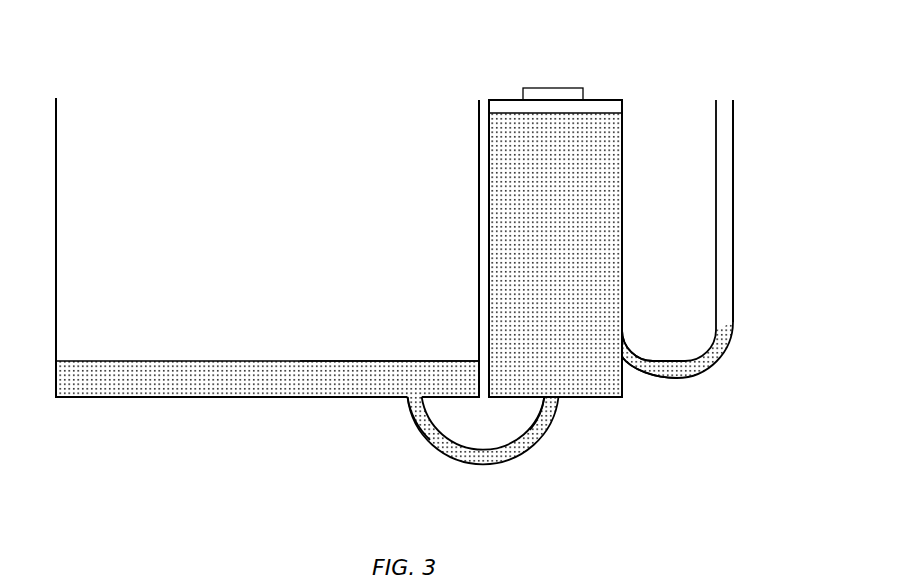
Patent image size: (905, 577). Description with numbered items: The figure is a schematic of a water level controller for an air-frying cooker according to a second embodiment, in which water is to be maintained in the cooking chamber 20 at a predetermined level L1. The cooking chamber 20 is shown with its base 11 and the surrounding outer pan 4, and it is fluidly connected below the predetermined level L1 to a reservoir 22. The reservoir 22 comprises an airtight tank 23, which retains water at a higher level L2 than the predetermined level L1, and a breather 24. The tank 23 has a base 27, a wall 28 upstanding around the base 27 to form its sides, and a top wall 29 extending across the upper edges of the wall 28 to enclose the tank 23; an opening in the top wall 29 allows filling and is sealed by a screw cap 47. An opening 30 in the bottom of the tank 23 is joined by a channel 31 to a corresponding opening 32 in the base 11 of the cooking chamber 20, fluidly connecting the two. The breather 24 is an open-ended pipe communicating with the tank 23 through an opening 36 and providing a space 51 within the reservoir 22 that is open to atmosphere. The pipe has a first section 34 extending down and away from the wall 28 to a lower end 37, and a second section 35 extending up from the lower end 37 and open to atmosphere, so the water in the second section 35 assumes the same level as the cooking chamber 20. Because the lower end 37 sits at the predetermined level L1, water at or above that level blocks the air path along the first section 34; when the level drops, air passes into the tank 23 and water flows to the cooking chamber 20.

The outer pan 4 is at (93, 398).
The base of the cooking chamber 11 is at (233, 398).
The predetermined level L1 is at (149, 360).
The cooking chamber 20 is at (280, 193).
The reservoir 22 is at (584, 53).
The tank 23 is at (624, 172).
The higher level L2 is at (498, 111).
The top wall 29 is at (607, 99).
The screw cap 47 is at (554, 87).
The wall 28 is at (624, 226).
The base 27 is at (614, 398).
The breather 24 is at (736, 220).
The second section 35 is at (734, 140).
The space 51 is at (712, 352).
The opening 36 is at (622, 336).
The lower end 37 is at (668, 360).
The first section 34 is at (655, 376).
The channel 31 is at (485, 466).
The opening 32 is at (407, 401).
The opening 30 is at (553, 401).